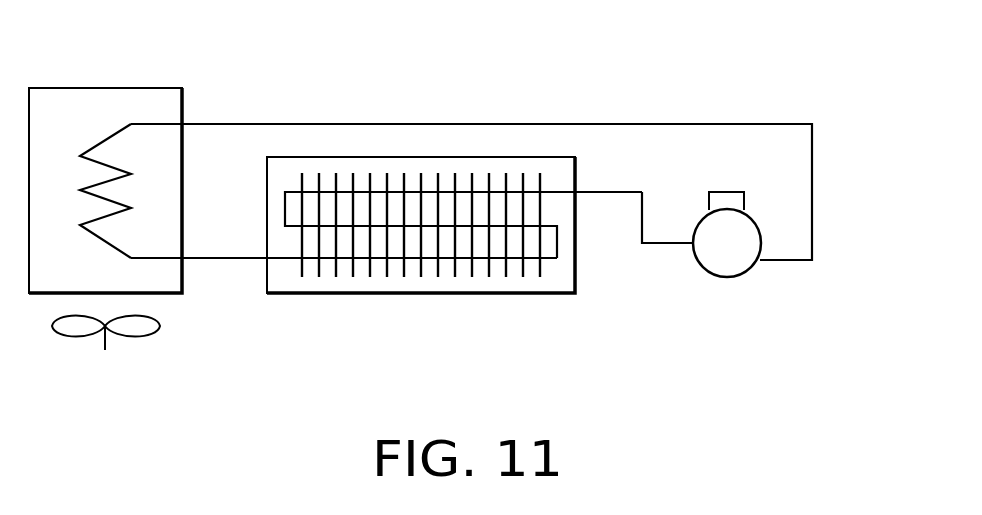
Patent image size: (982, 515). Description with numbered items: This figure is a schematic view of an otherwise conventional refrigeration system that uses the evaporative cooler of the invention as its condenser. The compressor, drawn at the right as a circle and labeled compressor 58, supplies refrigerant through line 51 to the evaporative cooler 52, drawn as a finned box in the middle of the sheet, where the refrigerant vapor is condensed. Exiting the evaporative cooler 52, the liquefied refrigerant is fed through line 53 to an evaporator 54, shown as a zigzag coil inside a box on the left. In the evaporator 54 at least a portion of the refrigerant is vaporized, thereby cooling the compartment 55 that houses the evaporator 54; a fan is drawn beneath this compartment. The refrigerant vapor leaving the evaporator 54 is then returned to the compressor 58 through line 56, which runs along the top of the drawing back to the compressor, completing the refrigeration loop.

The line 51 is at (665, 244).
The evaporative cooler 52 is at (390, 295).
The line 53 is at (223, 260).
The evaporator 54 is at (122, 125).
The compartment 55 is at (40, 88).
The line 56 is at (518, 123).
The compressor 58 is at (721, 278).